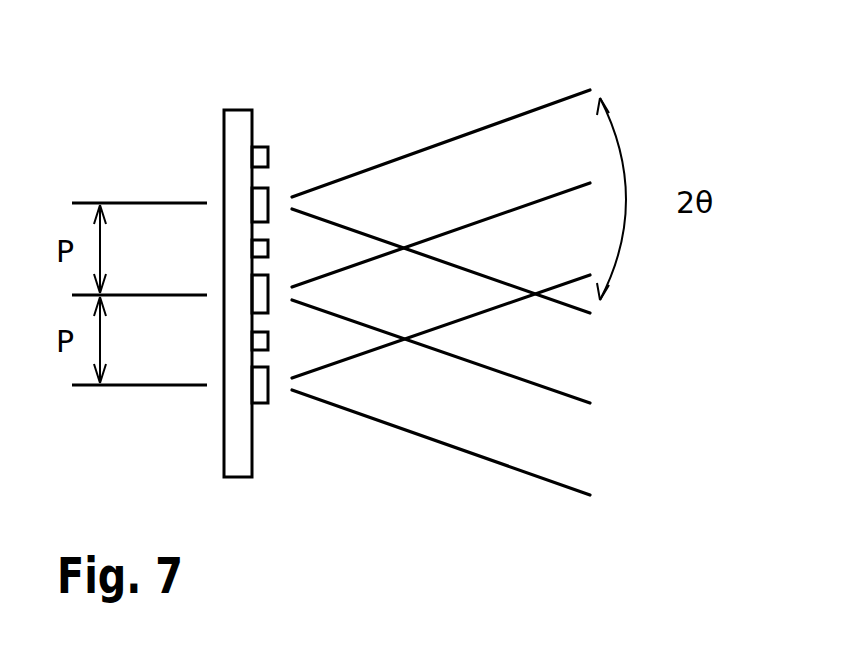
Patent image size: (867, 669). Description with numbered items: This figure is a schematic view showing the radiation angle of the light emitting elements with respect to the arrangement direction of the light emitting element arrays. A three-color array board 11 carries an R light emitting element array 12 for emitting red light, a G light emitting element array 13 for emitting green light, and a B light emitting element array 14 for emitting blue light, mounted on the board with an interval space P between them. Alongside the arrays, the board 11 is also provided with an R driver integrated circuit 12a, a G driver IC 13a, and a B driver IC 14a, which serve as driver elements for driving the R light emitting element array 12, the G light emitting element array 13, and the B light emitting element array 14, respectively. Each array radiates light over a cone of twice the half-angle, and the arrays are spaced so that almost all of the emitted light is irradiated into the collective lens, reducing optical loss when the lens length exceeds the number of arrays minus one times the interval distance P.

The three-color array board 11 is at (235, 110).
The R driver integrated circuit 12a is at (270, 150).
The R light emitting element array 12 is at (268, 188).
The G driver IC 13a is at (268, 248).
The G light emitting element array 13 is at (252, 288).
The B driver IC 14a is at (268, 342).
The B light emitting element array 14 is at (268, 404).